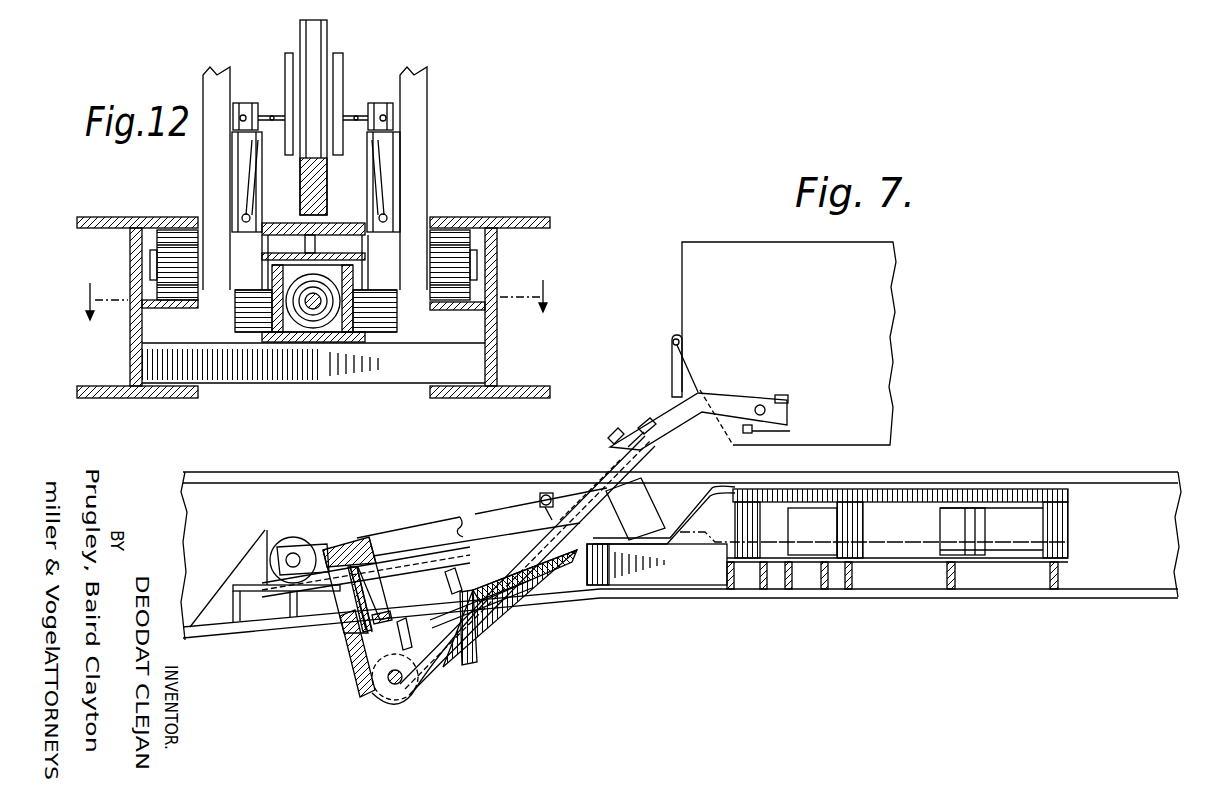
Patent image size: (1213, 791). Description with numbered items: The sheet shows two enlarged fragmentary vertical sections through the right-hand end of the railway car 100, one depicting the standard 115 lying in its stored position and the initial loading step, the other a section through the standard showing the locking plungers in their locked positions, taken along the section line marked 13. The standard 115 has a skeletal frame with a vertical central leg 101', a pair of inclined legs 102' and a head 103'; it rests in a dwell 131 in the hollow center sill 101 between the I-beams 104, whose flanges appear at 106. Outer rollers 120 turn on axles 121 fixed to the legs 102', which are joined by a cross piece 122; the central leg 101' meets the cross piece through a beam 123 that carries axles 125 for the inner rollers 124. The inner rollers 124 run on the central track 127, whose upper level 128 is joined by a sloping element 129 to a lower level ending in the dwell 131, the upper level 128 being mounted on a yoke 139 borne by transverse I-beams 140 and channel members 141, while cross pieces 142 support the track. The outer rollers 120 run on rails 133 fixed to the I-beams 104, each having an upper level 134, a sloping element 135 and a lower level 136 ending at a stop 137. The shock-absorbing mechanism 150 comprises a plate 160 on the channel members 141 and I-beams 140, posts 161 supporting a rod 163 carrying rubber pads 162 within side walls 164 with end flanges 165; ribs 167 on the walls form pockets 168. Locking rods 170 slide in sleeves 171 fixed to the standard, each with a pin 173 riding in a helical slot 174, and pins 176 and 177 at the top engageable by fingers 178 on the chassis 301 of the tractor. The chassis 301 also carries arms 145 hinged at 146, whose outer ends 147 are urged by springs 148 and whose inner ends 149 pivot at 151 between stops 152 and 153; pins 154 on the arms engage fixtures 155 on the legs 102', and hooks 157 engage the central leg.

In FIG. 12, the railway car 100 is at (590, 249).
In FIG. 7, the railway car 100 is at (640, 599).
In FIG. 12, the hollow center sill 101 is at (425, 198).
In FIG. 7, the hollow center sill 101 is at (407, 471).
In FIG. 7, the vertical central leg 101' is at (366, 572).
In FIG. 12, the inclined legs 102' is at (306, 178).
In FIG. 7, the inclined legs 102' is at (482, 522).
In FIG. 7, the head 103' is at (646, 493).
In FIG. 12, the I-beams 104 is at (130, 335).
In FIG. 7, the I-beams 104 is at (232, 501).
In FIG. 12, the flange 106 is at (143, 216).
In FIG. 7, the flange 106 is at (362, 464).
In FIG. 12, the standard 115 is at (470, 151).
In FIG. 7, the standard 115 is at (477, 513).
In FIG. 12, the rollers 120 is at (160, 291).
In FIG. 7, the rollers 120 is at (285, 537).
In FIG. 12, the axles 121 is at (160, 253).
In FIG. 7, the axles 121 is at (296, 556).
In FIG. 7, the cross piece 122 is at (362, 541).
In FIG. 7, the beam 123 is at (355, 649).
In FIG. 7, the rollers 124 is at (410, 699).
In FIG. 7, the axles 125 is at (385, 684).
In FIG. 7, the track 127 is at (708, 493).
In FIG. 12, the upper level 128 is at (340, 223).
In FIG. 7, the upper level 128 is at (780, 488).
In FIG. 7, the sloping element 129 is at (655, 506).
In FIG. 7, the dwell 131 is at (394, 691).
In FIG. 7, the track rails 133 is at (560, 529).
In FIG. 12, the upper level 134 is at (172, 309).
In FIG. 7, the upper level 134 is at (685, 541).
In FIG. 7, the sloping element 135 is at (530, 581).
In FIG. 7, the lower level 136 is at (280, 590).
In FIG. 7, the stop 137 is at (263, 534).
In FIG. 12, the yoke 139 is at (313, 288).
In FIG. 7, the yoke 139 is at (955, 506).
In FIG. 12, the transverse I-beams 140 is at (243, 371).
In FIG. 7, the transverse I-beams 140 is at (848, 589).
In FIG. 7, the channel members 141 is at (772, 589).
In FIG. 7, the cross pieces 142 is at (497, 613).
In FIG. 7, the arms 145 is at (715, 393).
In FIG. 7, the hinge 146 is at (613, 431).
In FIG. 7, the outer end 147 is at (570, 451).
In FIG. 7, the spring 148 is at (645, 421).
In FIG. 7, the inner end 149 is at (788, 411).
In FIG. 12, the shock-absorbing mechanism 150 is at (300, 318).
In FIG. 7, the shock-absorbing mechanism 150 is at (818, 526).
In FIG. 7, the pivot 151 is at (762, 405).
In FIG. 7, the stop 152 is at (788, 398).
In FIG. 7, the stop 153 is at (786, 431).
In FIG. 12, the pins 154 is at (290, 245).
In FIG. 7, the pins 154 is at (540, 496).
In FIG. 7, the fixtures 155 is at (543, 493).
In FIG. 7, the hooks 157 is at (672, 369).
In FIG. 7, the plate 160 is at (905, 563).
In FIG. 12, the posts 161 is at (305, 318).
In FIG. 12, the rubber pads 162 is at (330, 318).
In FIG. 12, the rod 163 is at (313, 314).
In FIG. 7, the side walls 164 is at (878, 521).
In FIG. 12, the flanges 165 is at (255, 319).
In FIG. 12, the ribs 167 is at (240, 309).
In FIG. 7, the ribs 167 is at (950, 521).
In FIG. 7, the pockets 168 is at (955, 531).
In FIG. 12, the locking rods 170 is at (245, 103).
In FIG. 7, the locking rods 170 is at (470, 641).
In FIG. 12, the sleeves 171 is at (232, 163).
In FIG. 7, the sleeves 171 is at (408, 637).
In FIG. 12, the pin 173 is at (250, 218).
In FIG. 12, the helical slot 174 is at (248, 196).
In FIG. 12, the pin 176 is at (268, 116).
In FIG. 7, the pin 176 is at (475, 591).
In FIG. 12, the pin 177 is at (240, 116).
In FIG. 12, the fingers 178 is at (287, 54).
In FIG. 7, the fingers 178 is at (688, 371).
In FIG. 7, the chassis 301 is at (898, 301).
In FIG. 12, the section line 13 is at (82, 301).